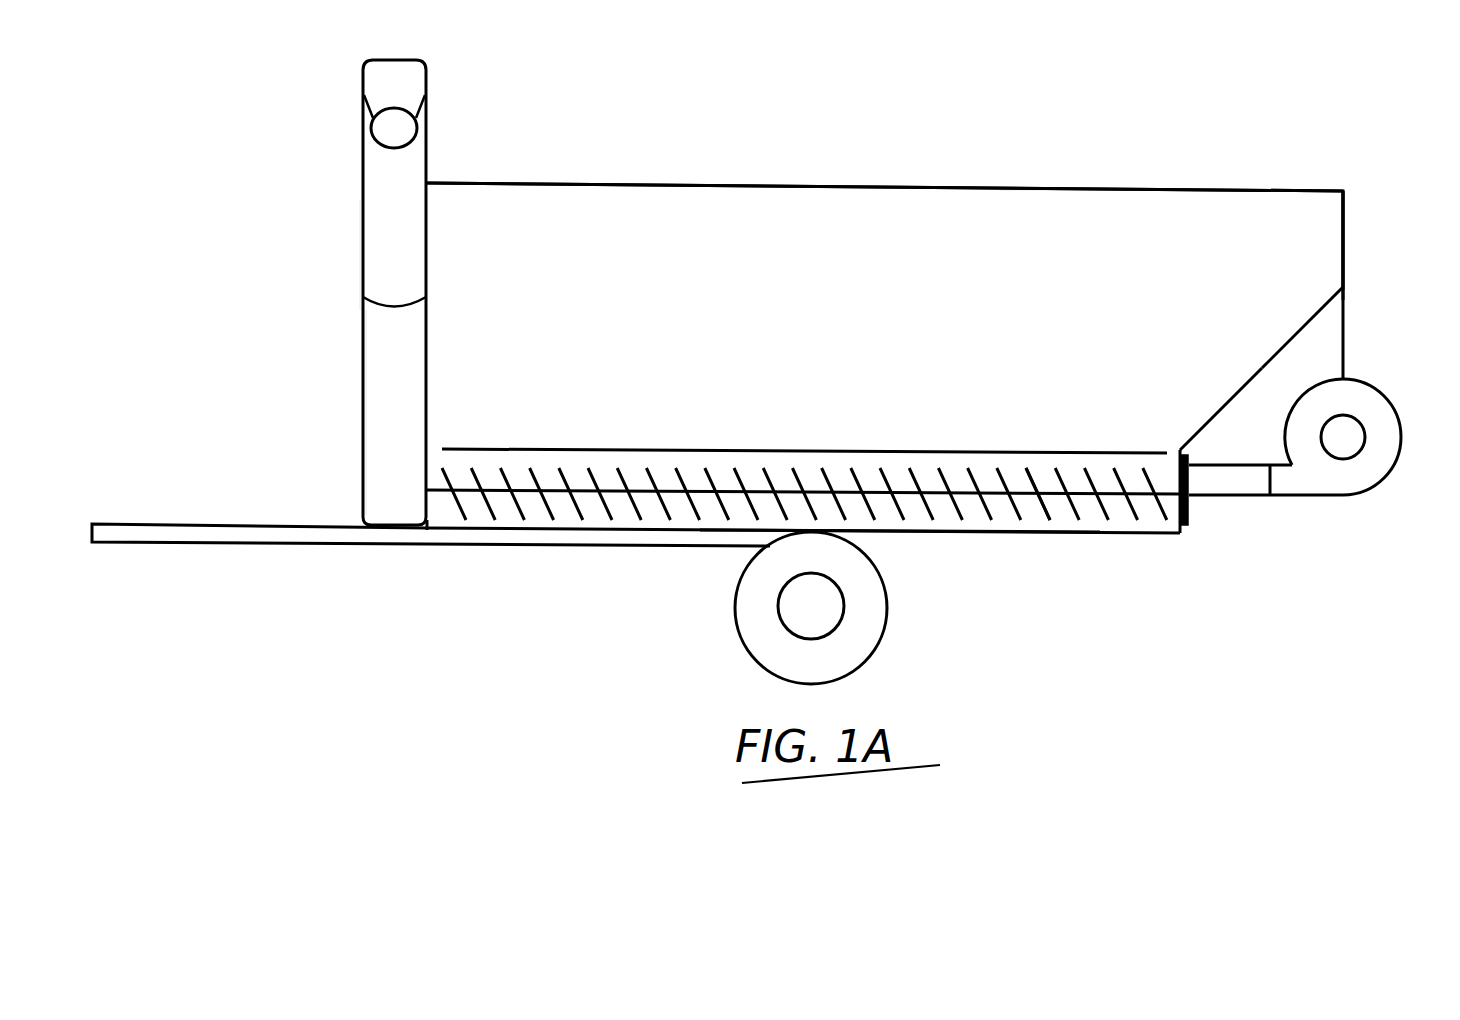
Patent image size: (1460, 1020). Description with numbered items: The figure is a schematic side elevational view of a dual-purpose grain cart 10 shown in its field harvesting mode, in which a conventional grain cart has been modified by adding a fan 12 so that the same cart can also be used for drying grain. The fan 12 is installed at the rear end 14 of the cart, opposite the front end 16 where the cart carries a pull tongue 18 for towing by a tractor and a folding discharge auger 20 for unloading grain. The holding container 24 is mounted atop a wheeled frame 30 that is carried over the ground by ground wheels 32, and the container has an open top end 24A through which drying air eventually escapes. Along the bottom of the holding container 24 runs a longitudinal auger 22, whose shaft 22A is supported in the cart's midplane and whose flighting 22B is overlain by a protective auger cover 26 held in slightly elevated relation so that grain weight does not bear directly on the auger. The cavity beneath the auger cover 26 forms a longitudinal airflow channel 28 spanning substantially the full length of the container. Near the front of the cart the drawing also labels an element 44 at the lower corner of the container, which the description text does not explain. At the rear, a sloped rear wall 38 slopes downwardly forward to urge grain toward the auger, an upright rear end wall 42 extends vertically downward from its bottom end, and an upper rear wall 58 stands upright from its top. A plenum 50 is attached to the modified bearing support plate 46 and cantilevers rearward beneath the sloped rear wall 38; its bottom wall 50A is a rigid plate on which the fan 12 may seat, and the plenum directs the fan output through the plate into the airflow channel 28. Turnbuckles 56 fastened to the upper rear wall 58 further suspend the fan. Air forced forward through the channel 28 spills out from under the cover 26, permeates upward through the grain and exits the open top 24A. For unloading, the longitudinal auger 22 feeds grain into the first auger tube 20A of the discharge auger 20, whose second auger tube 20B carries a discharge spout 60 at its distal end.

The dual-purpose grain cart 10 is at (1188, 168).
The fan 12 is at (1372, 430).
The rear end 14 is at (1378, 190).
The front end 16 is at (265, 302).
The pull tongue 18 is at (245, 536).
The discharge auger 20 is at (358, 207).
The first auger tube 20A is at (382, 393).
The second auger tube 20B is at (385, 252).
The longitudinal auger 22 is at (946, 468).
The auger shaft 22A is at (1046, 490).
The auger flighting 22B is at (985, 512).
The holding container 24 is at (1020, 218).
The open top end 24A is at (832, 186).
The auger cover 26 is at (815, 452).
The longitudinal airflow channel 28 is at (720, 456).
The wheeled frame 30 is at (625, 538).
The ground wheels 32 is at (874, 633).
The sloped rear wall 38 is at (1253, 378).
The upright rear end wall 42 is at (1191, 523).
The front corner 44 is at (440, 528).
The modified bearing support plate 46 is at (1192, 506).
The plenum 50 is at (1228, 480).
The bottom wall of the plenum 50A is at (1262, 498).
The turnbuckles 56 is at (1345, 324).
The upper rear wall 58 is at (1345, 232).
The discharge spout 60 is at (402, 131).